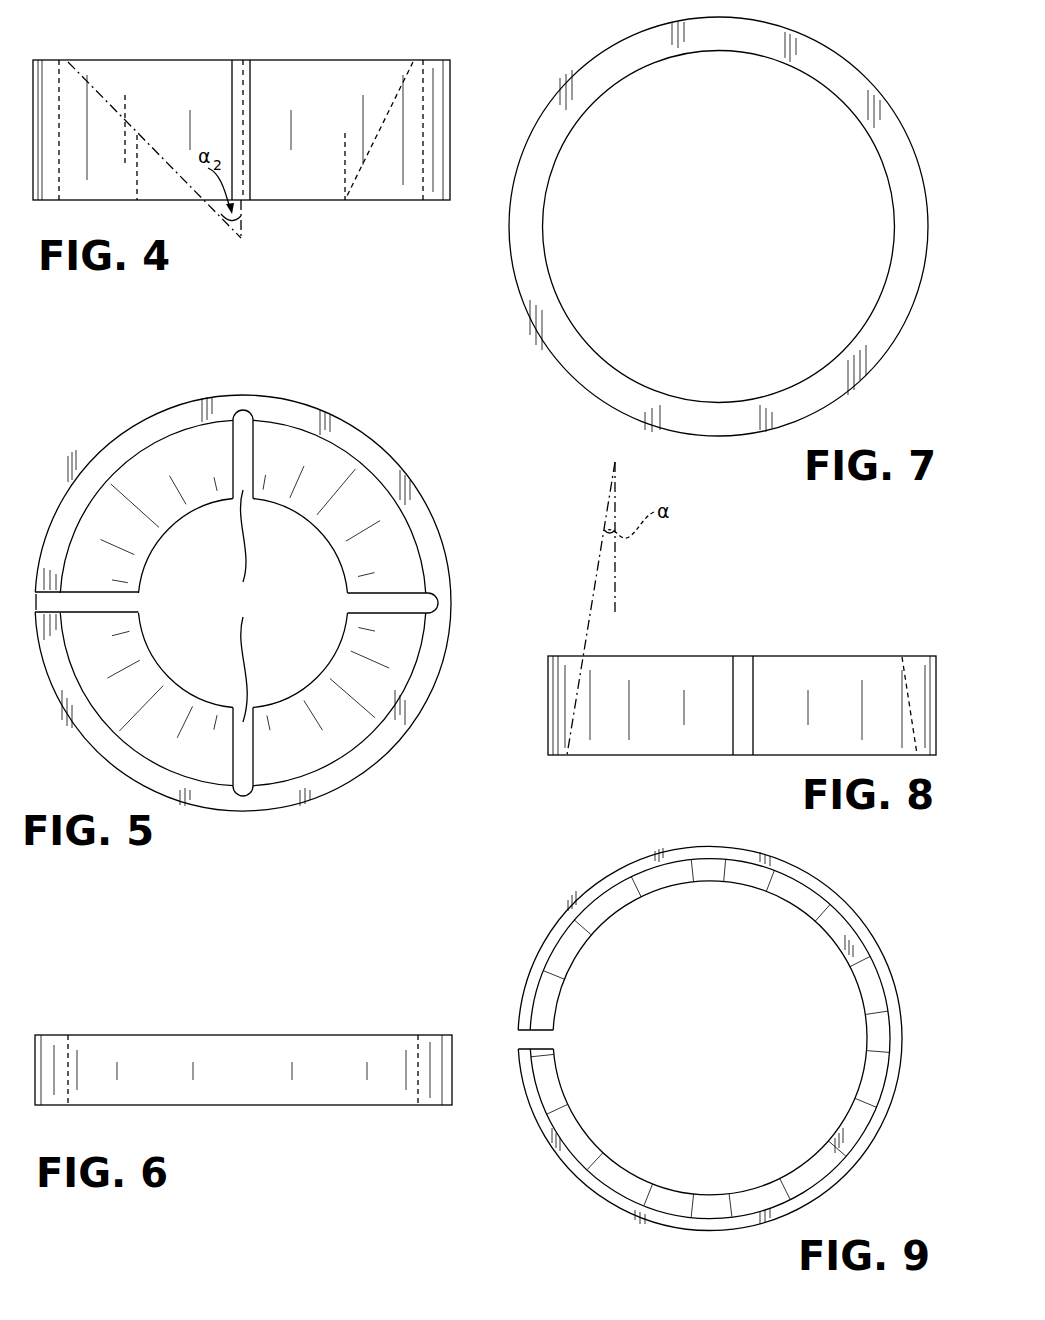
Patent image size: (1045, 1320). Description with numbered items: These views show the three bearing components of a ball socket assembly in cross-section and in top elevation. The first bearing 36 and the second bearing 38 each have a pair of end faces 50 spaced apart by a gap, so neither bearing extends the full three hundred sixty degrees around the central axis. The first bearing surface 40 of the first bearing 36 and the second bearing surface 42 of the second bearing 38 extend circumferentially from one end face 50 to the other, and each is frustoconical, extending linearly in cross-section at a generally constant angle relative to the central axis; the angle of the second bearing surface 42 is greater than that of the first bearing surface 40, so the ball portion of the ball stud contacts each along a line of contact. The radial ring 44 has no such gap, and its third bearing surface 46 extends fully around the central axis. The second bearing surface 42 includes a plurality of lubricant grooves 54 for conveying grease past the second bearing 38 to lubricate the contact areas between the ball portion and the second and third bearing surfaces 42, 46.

In FIG. 8, the first bearing 36 is at (637, 770).
In FIG. 9, the first bearing 36 is at (527, 967).
In FIG. 4, the second bearing 38 is at (463, 75).
In FIG. 5, the second bearing 38 is at (405, 751).
In FIG. 8, the first bearing surface 40 is at (568, 753).
In FIG. 9, the first bearing surface 40 is at (583, 1150).
In FIG. 4, the second bearing surface 42 is at (372, 100).
In FIG. 5, the second bearing surface 42 is at (336, 468).
In FIG. 6, the radial ring 44 is at (321, 1110).
In FIG. 7, the radial ring 44 is at (558, 233).
In FIG. 6, the third bearing surface 46 is at (75, 1050).
In FIG. 4, the end faces 50 is at (242, 90).
In FIG. 5, the end faces 50 is at (58, 603).
In FIG. 8, the end faces 50 is at (745, 742).
In FIG. 9, the end faces 50 is at (538, 1040).
In FIG. 5, the lubricant grooves 54 is at (353, 600).